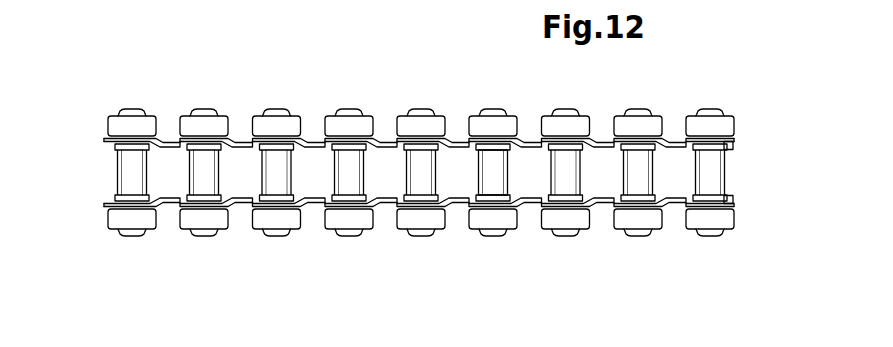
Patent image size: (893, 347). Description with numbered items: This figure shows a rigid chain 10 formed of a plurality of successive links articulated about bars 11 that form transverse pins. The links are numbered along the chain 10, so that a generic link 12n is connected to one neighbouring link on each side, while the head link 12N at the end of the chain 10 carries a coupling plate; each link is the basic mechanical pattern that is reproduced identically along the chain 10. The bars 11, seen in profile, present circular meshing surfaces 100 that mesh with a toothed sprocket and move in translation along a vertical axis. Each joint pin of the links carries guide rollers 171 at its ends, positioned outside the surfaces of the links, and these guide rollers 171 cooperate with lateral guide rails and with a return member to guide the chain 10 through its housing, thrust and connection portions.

The chain 10 is at (109, 94).
The link 12n is at (314, 140).
The head link 12N is at (675, 137).
The circular meshing surfaces 100 is at (493, 155).
The guide rollers 171 is at (420, 222).
The bars 11 is at (712, 236).